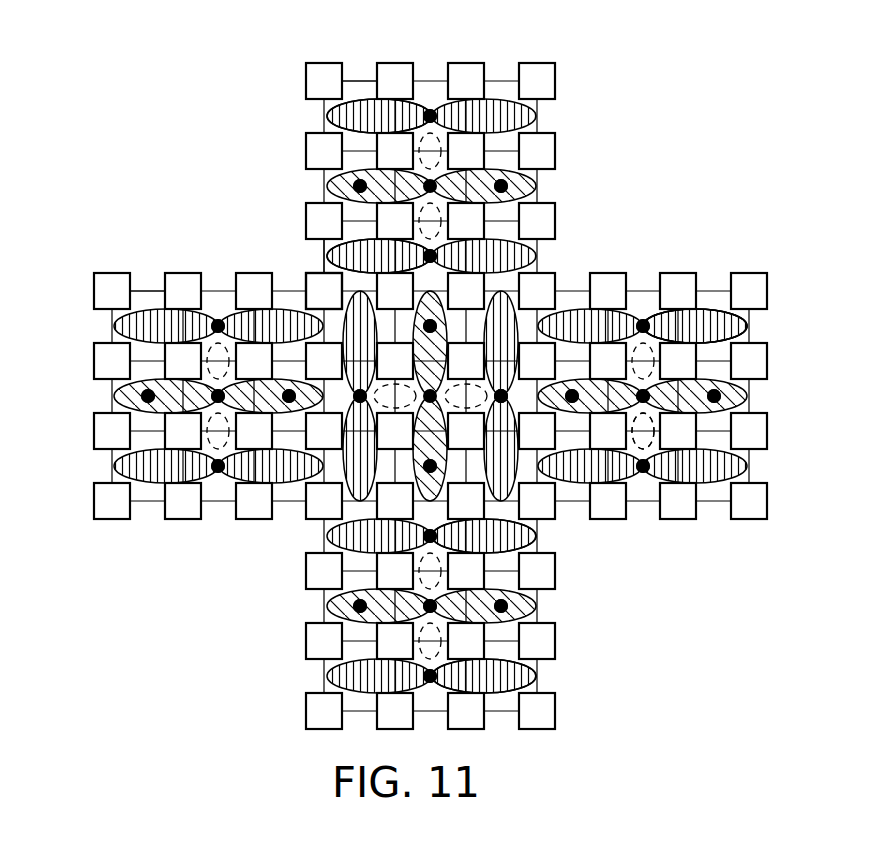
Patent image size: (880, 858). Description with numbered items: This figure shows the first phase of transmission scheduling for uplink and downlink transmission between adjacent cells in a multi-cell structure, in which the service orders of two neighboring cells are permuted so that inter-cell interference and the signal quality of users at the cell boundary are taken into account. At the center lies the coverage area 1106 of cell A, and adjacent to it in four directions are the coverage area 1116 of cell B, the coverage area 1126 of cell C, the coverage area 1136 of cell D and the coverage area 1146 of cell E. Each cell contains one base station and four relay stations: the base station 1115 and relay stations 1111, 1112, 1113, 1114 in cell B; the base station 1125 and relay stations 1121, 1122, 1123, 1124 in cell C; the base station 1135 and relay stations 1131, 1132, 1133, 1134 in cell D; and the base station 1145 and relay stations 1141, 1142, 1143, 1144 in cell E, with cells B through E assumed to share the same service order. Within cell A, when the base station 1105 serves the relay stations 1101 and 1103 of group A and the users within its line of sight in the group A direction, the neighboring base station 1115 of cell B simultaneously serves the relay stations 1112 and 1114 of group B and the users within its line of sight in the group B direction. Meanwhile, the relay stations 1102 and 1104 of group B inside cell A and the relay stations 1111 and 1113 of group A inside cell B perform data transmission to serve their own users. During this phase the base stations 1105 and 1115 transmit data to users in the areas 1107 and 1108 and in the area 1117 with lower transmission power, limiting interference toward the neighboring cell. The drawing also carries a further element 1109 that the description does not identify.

The relay station 1101 is at (430, 318).
The relay station 1102 is at (503, 404).
The relay station 1103 is at (430, 474).
The relay station 1104 is at (358, 404).
The base station 1105 is at (423, 535).
The coverage area 1106 is at (305, 276).
The area 1107 is at (330, 250).
The area 1108 is at (505, 388).
The interconnect line 1109 is at (322, 256).
The relay station 1111 is at (643, 318).
The relay station 1112 is at (721, 396).
The relay station 1113 is at (643, 474).
The relay station 1114 is at (573, 388).
The base station 1115 is at (652, 444).
The coverage area 1116 is at (700, 311).
The area 1117 is at (710, 310).
The relay station 1121 is at (509, 605).
The relay station 1122 is at (478, 548).
The relay station 1123 is at (423, 676).
The relay station 1124 is at (351, 606).
The base station 1125 is at (424, 604).
The coverage area 1126 is at (537, 672).
The relay station 1131 is at (211, 326).
The relay station 1132 is at (284, 402).
The relay station 1133 is at (211, 396).
The relay station 1134 is at (141, 395).
The base station 1135 is at (211, 466).
The coverage area 1136 is at (147, 290).
The relay station 1141 is at (423, 116).
The relay station 1142 is at (501, 178).
The relay station 1143 is at (437, 256).
The relay station 1144 is at (353, 186).
The base station 1145 is at (397, 131).
The coverage area 1146 is at (357, 80).